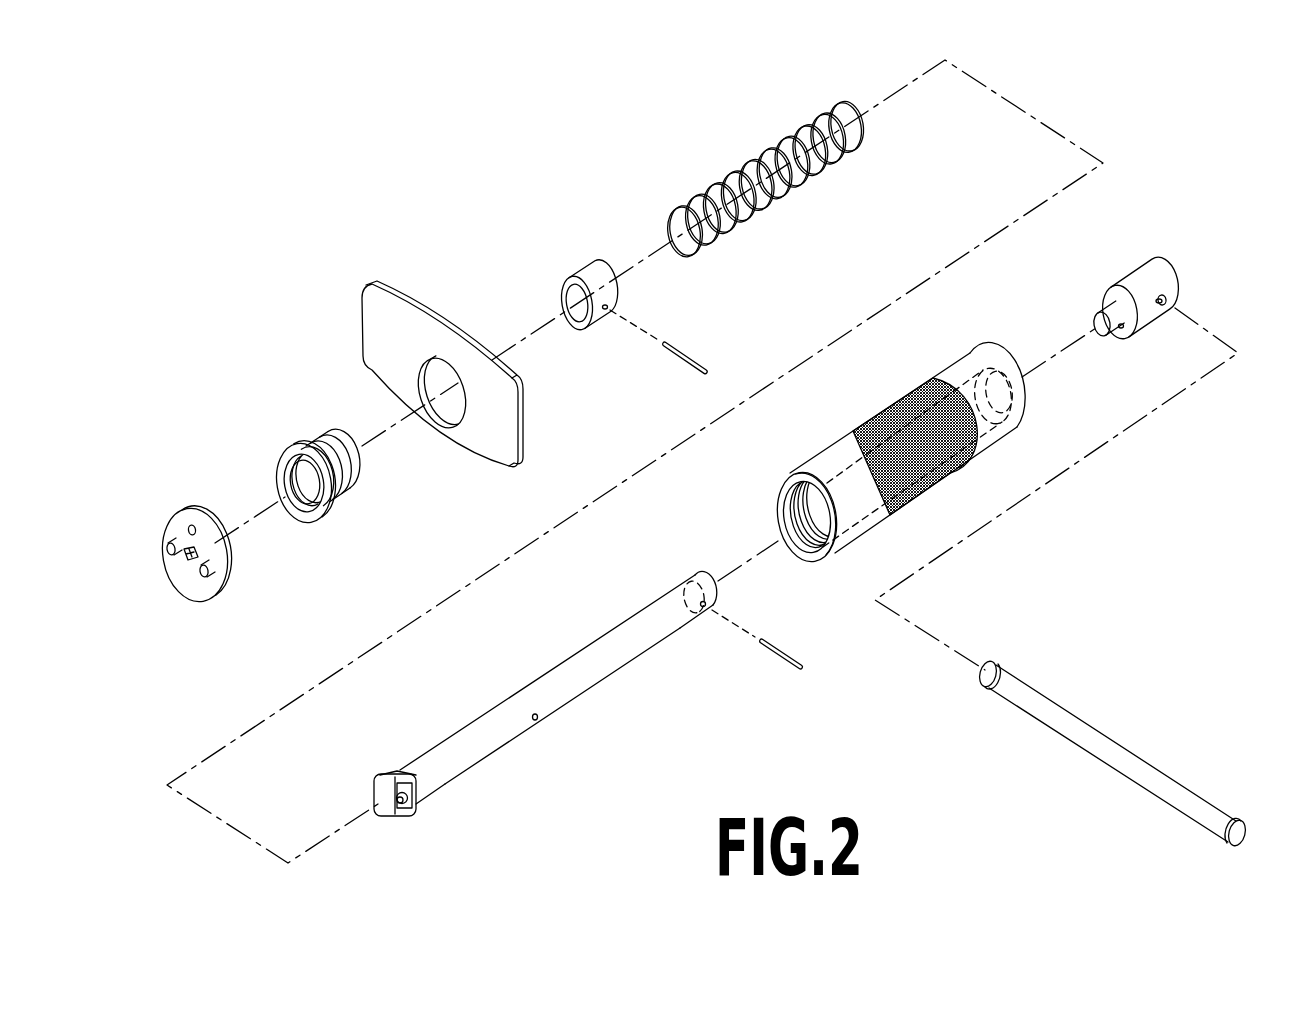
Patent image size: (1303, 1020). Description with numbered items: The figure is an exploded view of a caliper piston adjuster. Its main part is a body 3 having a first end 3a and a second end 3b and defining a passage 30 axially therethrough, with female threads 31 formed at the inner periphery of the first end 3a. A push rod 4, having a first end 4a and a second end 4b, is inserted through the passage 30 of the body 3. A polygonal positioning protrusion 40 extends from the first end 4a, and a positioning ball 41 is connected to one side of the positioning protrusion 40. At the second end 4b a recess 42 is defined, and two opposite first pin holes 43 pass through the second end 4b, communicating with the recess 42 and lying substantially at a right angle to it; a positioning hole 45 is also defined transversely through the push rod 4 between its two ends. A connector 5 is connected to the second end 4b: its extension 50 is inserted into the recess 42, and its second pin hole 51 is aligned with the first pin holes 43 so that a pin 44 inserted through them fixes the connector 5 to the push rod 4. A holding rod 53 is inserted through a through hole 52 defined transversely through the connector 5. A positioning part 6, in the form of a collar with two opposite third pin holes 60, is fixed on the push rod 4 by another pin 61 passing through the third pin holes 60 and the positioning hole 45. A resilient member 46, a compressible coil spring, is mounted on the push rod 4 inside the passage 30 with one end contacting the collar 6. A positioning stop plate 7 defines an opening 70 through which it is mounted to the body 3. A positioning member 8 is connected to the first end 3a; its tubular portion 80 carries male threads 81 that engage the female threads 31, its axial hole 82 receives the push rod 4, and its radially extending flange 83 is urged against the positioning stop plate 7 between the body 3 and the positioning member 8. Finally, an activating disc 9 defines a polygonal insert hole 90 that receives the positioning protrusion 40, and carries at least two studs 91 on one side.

The body 3 is at (881, 448).
The first end 3a is at (796, 487).
The second end 3b is at (993, 356).
The passage 30 is at (790, 518).
The female threads 31 is at (812, 556).
The push rod 4 is at (586, 690).
The first end 4a is at (423, 800).
The second end 4b is at (695, 617).
The positioning protrusion 40 is at (394, 796).
The positioning ball 41 is at (400, 806).
The recess 42 is at (690, 575).
The first pin holes 43 is at (703, 608).
The pin 44 is at (784, 670).
The positioning hole 45 is at (537, 721).
The resilient member 46 is at (762, 152).
The connector 5 is at (1148, 299).
The extension 50 is at (1104, 310).
The second pin hole 51 is at (1120, 330).
The through hole 52 is at (1170, 298).
The holding rod 53 is at (1118, 740).
The positioning part 6 is at (637, 290).
The third pin holes 60 is at (605, 312).
The pin 61 is at (683, 353).
The positioning stop plate 7 is at (419, 367).
The opening 70 is at (440, 382).
The positioning member 8 is at (344, 476).
The tubular portion 80 is at (358, 468).
The male threads 81 is at (348, 488).
The axial hole 82 is at (298, 517).
The flange 83 is at (300, 445).
The activating disc 9 is at (205, 570).
The insert hole 90 is at (188, 573).
The studs 91 is at (165, 532).